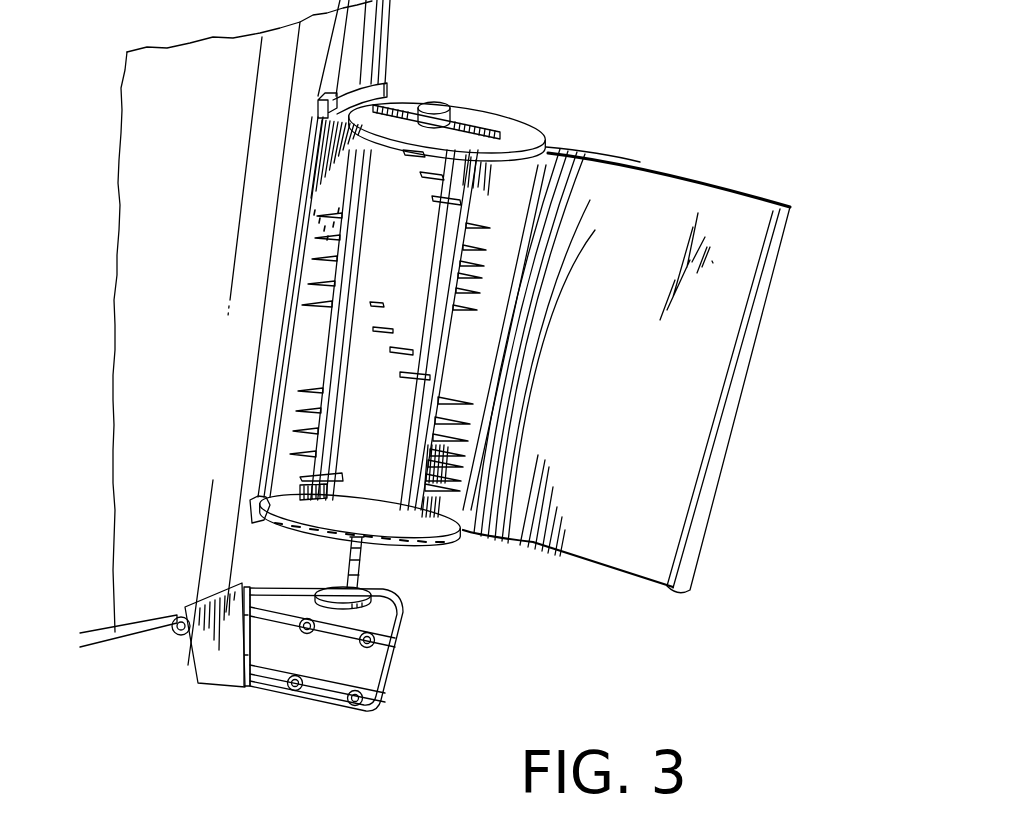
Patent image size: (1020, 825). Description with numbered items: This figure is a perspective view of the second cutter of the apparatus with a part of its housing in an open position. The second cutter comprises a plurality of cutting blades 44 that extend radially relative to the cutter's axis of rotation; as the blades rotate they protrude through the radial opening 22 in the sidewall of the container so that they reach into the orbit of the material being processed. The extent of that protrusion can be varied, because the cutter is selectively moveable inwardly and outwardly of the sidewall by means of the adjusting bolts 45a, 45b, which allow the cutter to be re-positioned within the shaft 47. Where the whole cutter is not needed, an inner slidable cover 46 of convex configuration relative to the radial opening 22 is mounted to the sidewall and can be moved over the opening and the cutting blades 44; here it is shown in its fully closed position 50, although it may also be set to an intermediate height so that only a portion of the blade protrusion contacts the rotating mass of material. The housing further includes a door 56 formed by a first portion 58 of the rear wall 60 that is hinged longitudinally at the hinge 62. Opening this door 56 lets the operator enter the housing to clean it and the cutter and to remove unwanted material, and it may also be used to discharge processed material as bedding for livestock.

The radial opening 22 is at (282, 595).
The cutting blades 44 is at (445, 195).
The adjusting bolt 45a is at (390, 648).
The adjusting bolt 45b is at (445, 105).
The inner slidable cover 46 is at (400, 100).
The shaft 47 is at (487, 127).
The fully closed position 50 is at (322, 469).
The door 56 is at (723, 181).
The first portion 58 is at (675, 390).
The rear wall 60 is at (440, 483).
The hinge 62 is at (533, 222).